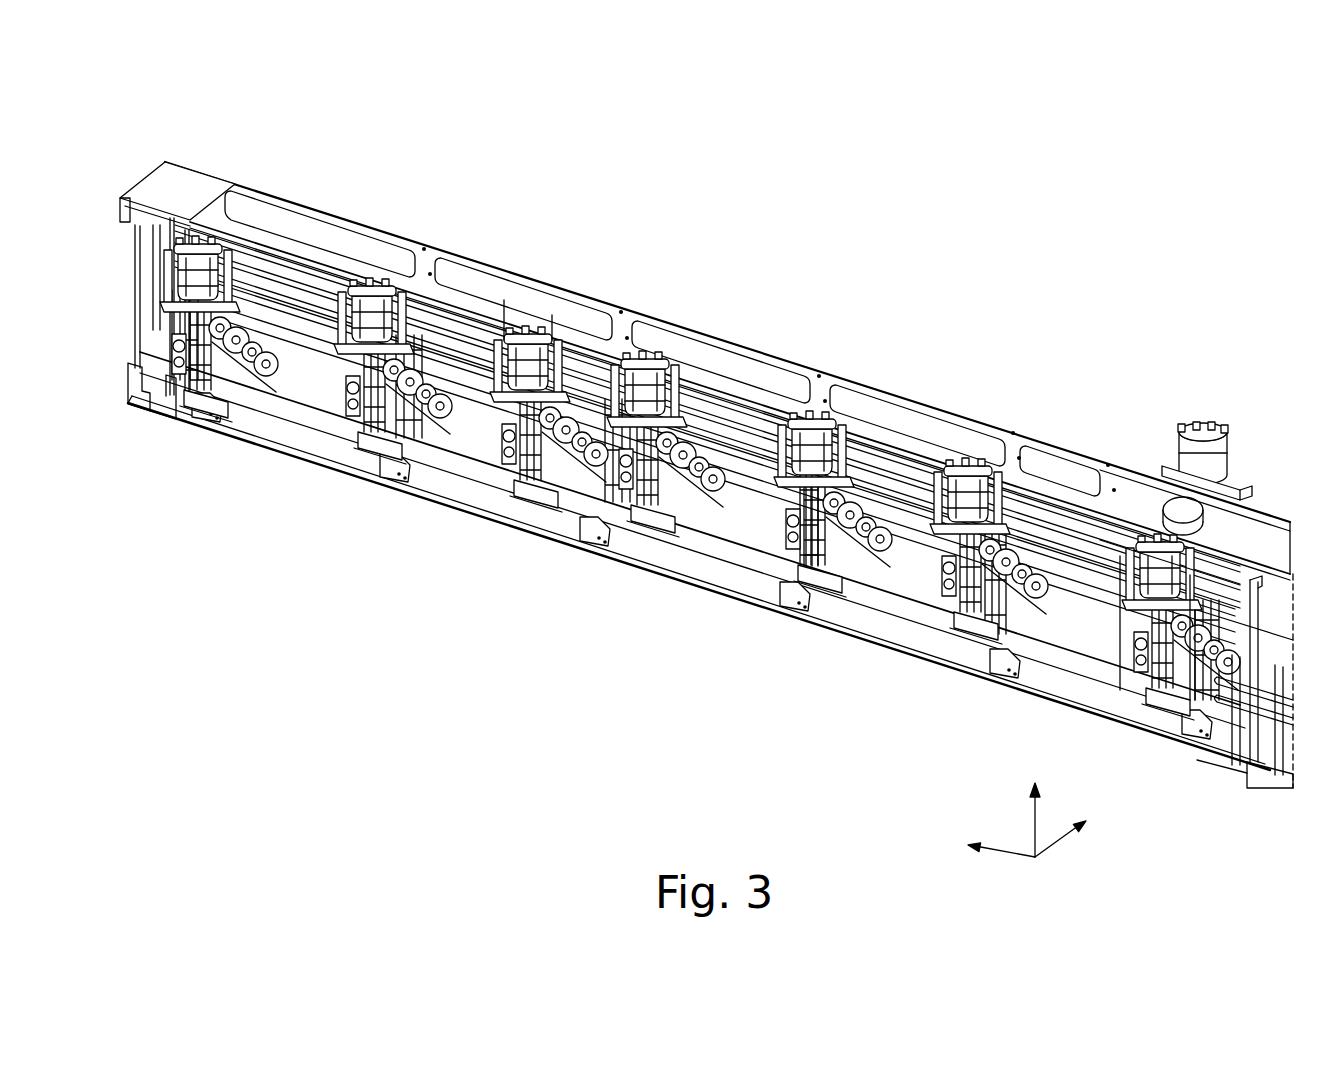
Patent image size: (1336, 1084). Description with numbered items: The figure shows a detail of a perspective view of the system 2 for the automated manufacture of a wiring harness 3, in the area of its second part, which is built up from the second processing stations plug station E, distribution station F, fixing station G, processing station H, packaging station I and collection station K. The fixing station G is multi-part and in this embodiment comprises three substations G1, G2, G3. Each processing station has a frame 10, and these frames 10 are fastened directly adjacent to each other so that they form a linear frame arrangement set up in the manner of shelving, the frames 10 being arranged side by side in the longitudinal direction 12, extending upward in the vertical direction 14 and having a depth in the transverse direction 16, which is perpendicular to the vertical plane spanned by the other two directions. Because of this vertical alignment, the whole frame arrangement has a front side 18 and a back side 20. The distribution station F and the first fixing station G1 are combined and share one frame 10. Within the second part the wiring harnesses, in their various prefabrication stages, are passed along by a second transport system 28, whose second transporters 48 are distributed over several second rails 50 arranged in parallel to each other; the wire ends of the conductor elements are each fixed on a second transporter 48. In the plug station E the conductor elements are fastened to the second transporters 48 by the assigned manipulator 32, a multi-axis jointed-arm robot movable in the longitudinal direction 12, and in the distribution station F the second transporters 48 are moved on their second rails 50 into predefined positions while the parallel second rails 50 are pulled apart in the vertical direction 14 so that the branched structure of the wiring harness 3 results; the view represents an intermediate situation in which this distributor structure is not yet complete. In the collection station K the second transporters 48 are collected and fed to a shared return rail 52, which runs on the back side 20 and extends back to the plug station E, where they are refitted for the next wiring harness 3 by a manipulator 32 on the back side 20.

The system 2 is at (1147, 268).
The wiring harness 3 is at (475, 340).
The frame 10 is at (272, 440).
The longitudinal direction 12 is at (1015, 860).
The vertical direction 14 is at (1032, 812).
The transverse direction 16 is at (1050, 858).
The front side 18 is at (540, 573).
The back side 20 is at (712, 313).
The second transport system 28 is at (963, 520).
The manipulator 32 is at (1212, 425).
The second transporter 48 is at (1062, 622).
The second rail 50 is at (720, 405).
The return rail 52 is at (456, 415).
The collection station K is at (198, 167).
The packaging station I is at (337, 207).
The processing station H is at (540, 262).
The fixing station G is at (1158, 338).
The first fixing station G1 is at (1125, 447).
The second fixing substation G2 is at (930, 385).
The third fixing substation G3 is at (745, 333).
The distribution station F is at (1172, 387).
The plug station E is at (1270, 505).